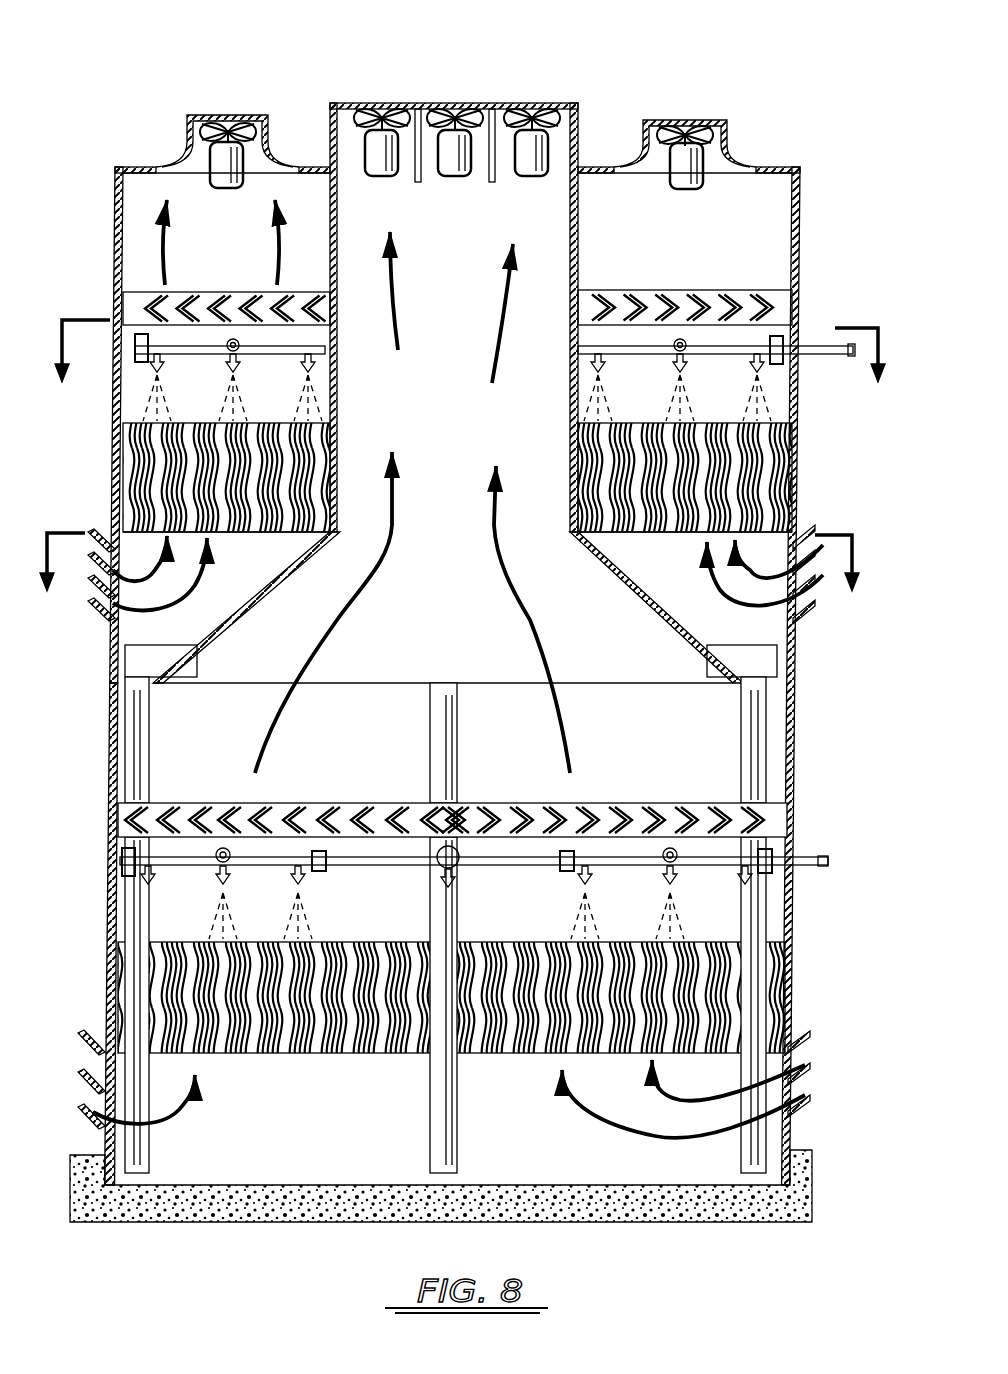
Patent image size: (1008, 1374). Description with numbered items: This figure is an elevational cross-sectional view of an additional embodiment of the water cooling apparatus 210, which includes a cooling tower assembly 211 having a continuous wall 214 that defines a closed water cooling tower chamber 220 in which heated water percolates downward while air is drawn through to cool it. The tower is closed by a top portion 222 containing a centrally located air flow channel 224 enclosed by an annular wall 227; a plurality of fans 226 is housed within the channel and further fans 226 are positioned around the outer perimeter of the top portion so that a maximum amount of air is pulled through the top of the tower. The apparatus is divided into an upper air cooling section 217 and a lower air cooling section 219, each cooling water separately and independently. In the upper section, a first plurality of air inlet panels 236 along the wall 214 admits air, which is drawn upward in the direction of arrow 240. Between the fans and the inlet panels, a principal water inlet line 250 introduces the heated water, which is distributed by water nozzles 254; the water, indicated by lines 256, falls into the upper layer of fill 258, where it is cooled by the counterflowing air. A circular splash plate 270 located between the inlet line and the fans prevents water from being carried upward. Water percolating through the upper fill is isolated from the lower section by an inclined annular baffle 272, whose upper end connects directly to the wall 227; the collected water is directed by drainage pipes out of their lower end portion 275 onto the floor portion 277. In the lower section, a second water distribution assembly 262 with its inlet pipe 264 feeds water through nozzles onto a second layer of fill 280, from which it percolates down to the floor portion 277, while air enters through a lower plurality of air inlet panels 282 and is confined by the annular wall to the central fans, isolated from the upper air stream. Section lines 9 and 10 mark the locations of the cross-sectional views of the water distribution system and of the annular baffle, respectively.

The apparatus 210 is at (812, 243).
The cooling tower assembly 211 is at (112, 208).
The continuous wall 214 is at (108, 738).
The upper air cooling section 217 is at (806, 432).
The lower air cooling section 219 is at (812, 806).
The water cooling tower chamber 220 is at (627, 228).
The top portion 222 is at (763, 167).
The air flow channel 224 is at (353, 143).
The fans 226 is at (210, 166).
The wall of air channel 227 is at (330, 135).
The air inlet panels 236 is at (110, 612).
The arrow 240 is at (163, 600).
The principal water inlet line 250 is at (192, 354).
The water nozzles 254 is at (147, 373).
The water flow lines 256 is at (246, 403).
The upper layer of fill 258 is at (160, 485).
The lower water distribution assembly 262 is at (705, 878).
The inlet pipe 264 is at (820, 868).
The circular splash plate 270 is at (212, 300).
The annular baffle 272 is at (622, 585).
The lower end portion 275 is at (450, 1180).
The floor portion 277 is at (260, 1185).
The lower section of fill 280 is at (170, 985).
The air inlet panels 282 is at (96, 1092).
The section line 9- 9 is at (464, 368).
The section line 10- 10 is at (455, 575).